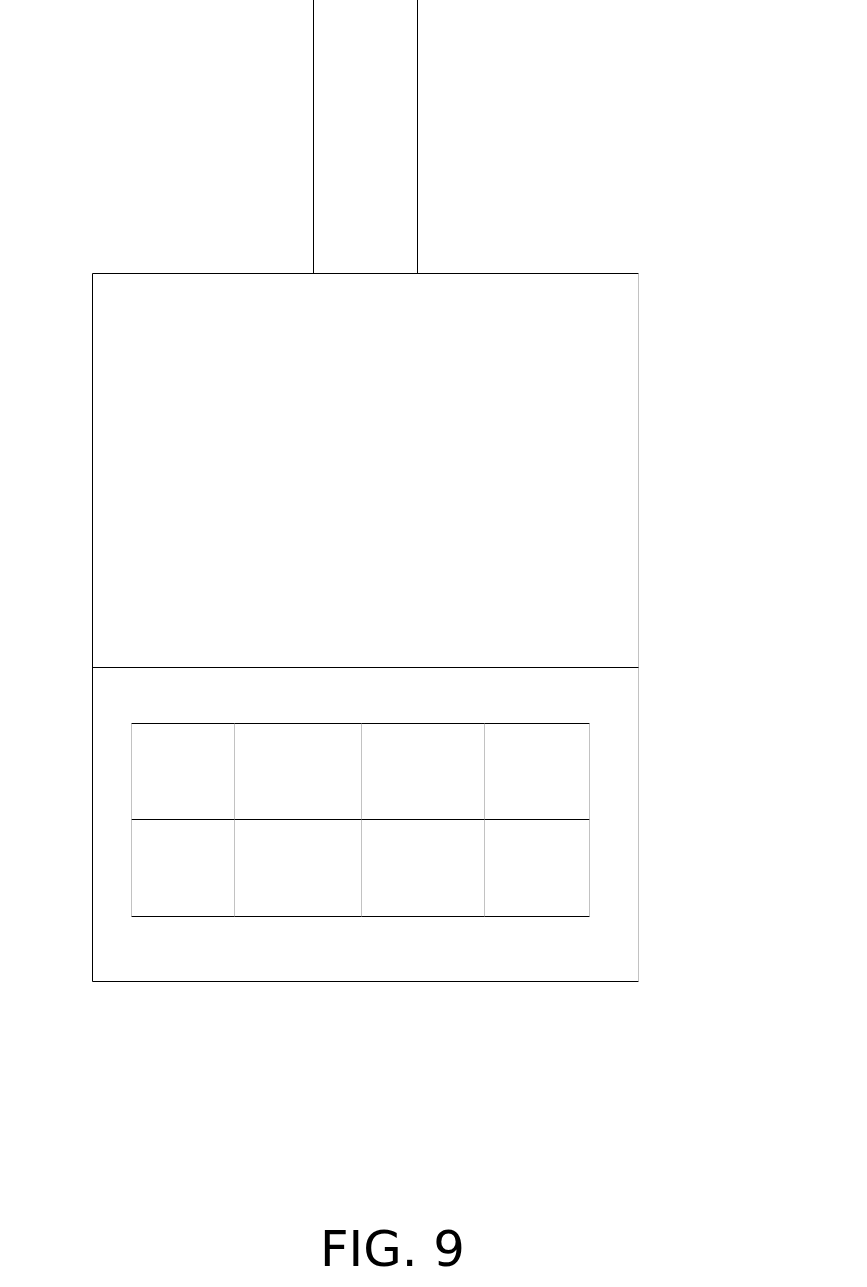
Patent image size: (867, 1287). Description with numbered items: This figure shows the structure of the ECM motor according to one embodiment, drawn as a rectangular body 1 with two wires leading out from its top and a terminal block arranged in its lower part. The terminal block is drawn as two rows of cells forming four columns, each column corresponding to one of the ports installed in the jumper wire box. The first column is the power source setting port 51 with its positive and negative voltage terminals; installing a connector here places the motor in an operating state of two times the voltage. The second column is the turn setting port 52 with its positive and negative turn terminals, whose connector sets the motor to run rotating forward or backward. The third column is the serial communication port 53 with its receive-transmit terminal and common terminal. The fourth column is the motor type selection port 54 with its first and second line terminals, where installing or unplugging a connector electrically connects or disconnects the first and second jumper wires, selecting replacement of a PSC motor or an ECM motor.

The controller housing 1 is at (545, 478).
The power source setting port 51 is at (187, 913).
The turn setting port 52 is at (312, 913).
The serial communication port 53 is at (438, 912).
The motor type selection port 54 is at (540, 912).